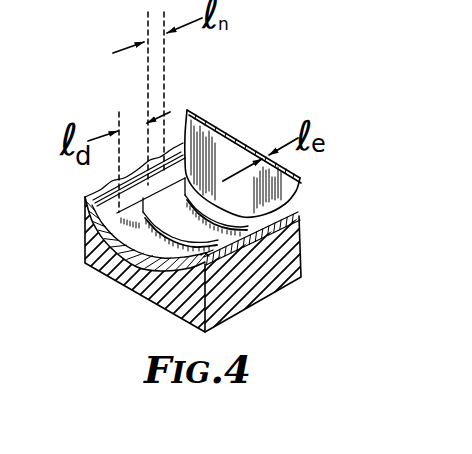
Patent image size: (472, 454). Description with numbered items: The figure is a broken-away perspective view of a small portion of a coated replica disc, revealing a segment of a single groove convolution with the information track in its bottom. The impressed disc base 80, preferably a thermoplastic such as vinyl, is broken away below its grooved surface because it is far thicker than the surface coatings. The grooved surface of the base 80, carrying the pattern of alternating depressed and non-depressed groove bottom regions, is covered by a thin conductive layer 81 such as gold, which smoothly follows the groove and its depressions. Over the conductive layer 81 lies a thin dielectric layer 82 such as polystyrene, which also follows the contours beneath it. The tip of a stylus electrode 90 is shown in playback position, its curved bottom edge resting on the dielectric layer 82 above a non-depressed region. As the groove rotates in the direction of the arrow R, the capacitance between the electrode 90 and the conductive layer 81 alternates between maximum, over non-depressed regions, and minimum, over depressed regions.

The impressed disc base 80 is at (298, 262).
The conductive layer 81 is at (83, 203).
The dielectric layer 82 is at (293, 211).
The electrode 90 is at (237, 109).
The arrow indicating disc groove rotation R is at (283, 260).